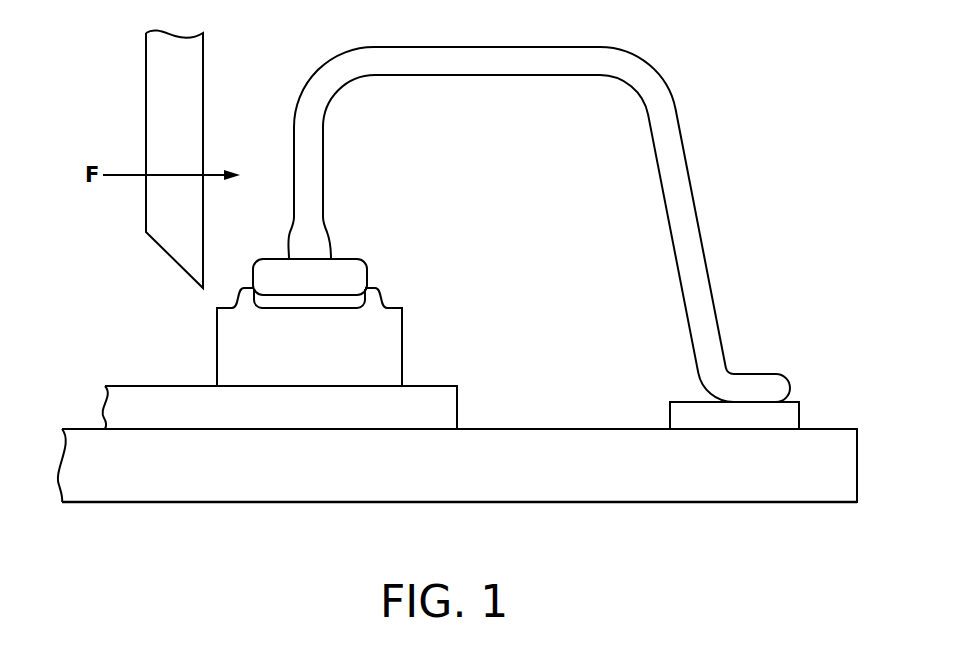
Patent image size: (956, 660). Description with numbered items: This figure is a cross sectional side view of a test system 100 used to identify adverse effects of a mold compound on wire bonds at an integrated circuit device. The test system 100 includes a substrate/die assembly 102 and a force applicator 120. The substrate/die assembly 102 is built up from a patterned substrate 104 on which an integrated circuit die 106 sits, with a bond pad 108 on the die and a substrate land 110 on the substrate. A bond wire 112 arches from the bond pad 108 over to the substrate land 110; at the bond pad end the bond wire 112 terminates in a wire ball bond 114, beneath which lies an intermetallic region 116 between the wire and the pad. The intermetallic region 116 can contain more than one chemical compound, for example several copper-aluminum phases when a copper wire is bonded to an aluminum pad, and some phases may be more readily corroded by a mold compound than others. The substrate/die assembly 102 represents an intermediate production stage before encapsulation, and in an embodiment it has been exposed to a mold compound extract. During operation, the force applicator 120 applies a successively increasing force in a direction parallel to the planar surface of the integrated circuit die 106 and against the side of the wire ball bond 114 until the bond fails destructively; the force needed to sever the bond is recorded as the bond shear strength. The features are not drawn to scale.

The test system 100 is at (264, 584).
The substrate/die assembly 102 is at (521, 202).
The patterned substrate 104 is at (80, 468).
The integrated circuit die 106 is at (122, 410).
The bond pad 108 is at (232, 355).
The substrate land 110 is at (793, 417).
The bond wire 112 is at (565, 57).
The wire ball bond 114 is at (365, 227).
The intermetallic region 116 is at (325, 302).
The force applicator 120 is at (162, 93).